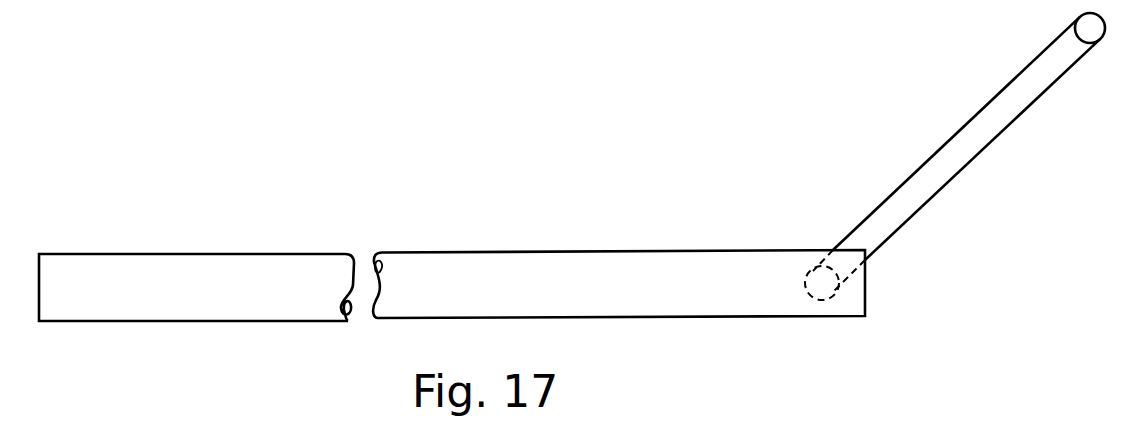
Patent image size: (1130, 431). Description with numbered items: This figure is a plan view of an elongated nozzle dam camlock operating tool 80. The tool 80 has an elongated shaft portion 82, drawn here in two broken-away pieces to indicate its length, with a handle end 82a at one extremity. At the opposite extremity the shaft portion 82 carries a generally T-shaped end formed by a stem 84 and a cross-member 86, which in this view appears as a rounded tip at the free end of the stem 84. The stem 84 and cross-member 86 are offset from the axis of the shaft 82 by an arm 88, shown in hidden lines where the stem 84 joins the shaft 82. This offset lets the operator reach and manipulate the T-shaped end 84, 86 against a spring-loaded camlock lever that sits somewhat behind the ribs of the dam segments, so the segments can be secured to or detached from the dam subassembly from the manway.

The tool 80 is at (245, 230).
The shaft portion 82 is at (620, 317).
The handle end 82a is at (118, 313).
The stem 84 is at (1000, 135).
The cross-member 86 is at (1075, 22).
The arm 88 is at (832, 293).